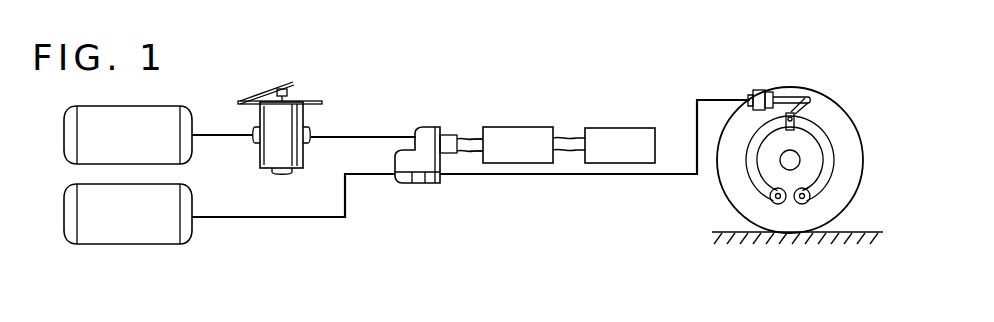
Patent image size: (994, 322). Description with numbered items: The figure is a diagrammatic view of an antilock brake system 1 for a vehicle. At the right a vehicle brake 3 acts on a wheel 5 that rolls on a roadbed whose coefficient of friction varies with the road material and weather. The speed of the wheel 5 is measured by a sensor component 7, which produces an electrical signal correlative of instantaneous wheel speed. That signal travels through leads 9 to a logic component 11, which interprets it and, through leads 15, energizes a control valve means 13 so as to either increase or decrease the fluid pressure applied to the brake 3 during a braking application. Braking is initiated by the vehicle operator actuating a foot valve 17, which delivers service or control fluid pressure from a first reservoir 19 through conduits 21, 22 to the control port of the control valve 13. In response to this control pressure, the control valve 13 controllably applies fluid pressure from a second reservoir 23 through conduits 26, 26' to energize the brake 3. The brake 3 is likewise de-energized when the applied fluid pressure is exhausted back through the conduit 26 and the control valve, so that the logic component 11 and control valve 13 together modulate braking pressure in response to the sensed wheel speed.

The antilock brake system 1 is at (530, 199).
The vehicle brake 3 is at (759, 135).
The wheel 5 is at (836, 202).
The sensor component 7 is at (637, 128).
The leads 9 is at (574, 138).
The logic component 11 is at (531, 127).
The control valve means 13 is at (427, 133).
The leads 15 is at (472, 135).
The foot valve 17 is at (272, 153).
The reservoir 19 is at (146, 118).
The conduit 21 is at (204, 135).
The conduit 22 is at (355, 137).
The reservoir 23 is at (190, 229).
The conduit 26 is at (296, 198).
The conduit 26' is at (595, 163).